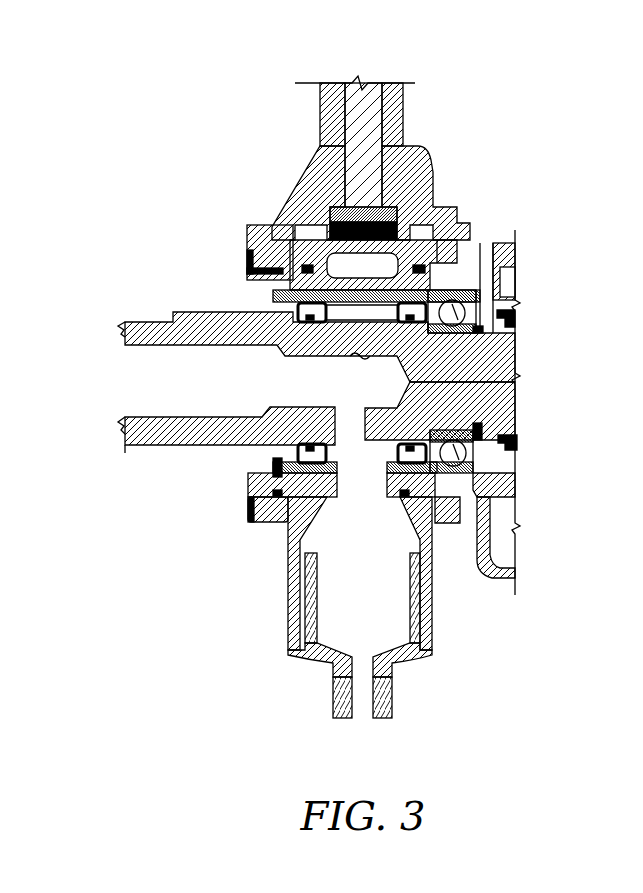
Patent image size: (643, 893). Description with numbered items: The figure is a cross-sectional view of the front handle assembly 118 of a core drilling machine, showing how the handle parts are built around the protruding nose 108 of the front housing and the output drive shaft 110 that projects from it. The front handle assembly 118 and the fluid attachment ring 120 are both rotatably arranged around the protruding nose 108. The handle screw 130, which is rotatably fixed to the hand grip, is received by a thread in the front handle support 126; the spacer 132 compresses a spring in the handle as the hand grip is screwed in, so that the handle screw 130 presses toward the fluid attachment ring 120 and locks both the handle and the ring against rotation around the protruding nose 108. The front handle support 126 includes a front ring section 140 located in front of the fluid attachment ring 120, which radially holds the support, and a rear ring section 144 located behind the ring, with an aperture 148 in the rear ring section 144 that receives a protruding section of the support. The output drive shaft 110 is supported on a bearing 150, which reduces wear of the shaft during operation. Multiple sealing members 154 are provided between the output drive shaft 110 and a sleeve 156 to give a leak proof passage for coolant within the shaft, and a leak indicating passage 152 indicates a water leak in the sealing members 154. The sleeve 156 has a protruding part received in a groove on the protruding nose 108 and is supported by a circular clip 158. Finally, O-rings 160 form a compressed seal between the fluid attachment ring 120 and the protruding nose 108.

The protruding nose 108 is at (488, 477).
The output drive shaft 110 is at (160, 318).
The front handle assembly 118 is at (112, 702).
The fluid attachment ring 120 is at (292, 233).
The front handle support 126 is at (312, 170).
The handle screw 130 is at (402, 100).
The spacer 132 is at (325, 122).
The front ring section 140 is at (247, 224).
The rear ring section 144 is at (440, 523).
The aperture 148 is at (488, 247).
The bearing 150 is at (518, 407).
The leak indicating passage 152 is at (492, 243).
The sealing members 154 is at (297, 310).
The sleeve 156 is at (330, 470).
The circular clip 158 is at (268, 470).
The O-rings 160 is at (290, 548).